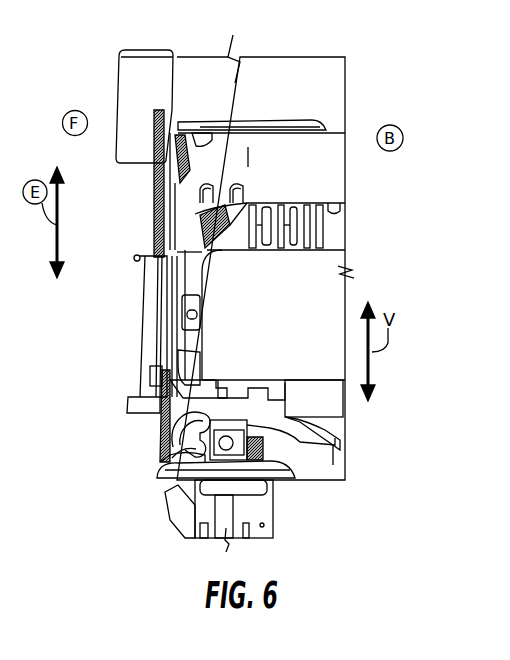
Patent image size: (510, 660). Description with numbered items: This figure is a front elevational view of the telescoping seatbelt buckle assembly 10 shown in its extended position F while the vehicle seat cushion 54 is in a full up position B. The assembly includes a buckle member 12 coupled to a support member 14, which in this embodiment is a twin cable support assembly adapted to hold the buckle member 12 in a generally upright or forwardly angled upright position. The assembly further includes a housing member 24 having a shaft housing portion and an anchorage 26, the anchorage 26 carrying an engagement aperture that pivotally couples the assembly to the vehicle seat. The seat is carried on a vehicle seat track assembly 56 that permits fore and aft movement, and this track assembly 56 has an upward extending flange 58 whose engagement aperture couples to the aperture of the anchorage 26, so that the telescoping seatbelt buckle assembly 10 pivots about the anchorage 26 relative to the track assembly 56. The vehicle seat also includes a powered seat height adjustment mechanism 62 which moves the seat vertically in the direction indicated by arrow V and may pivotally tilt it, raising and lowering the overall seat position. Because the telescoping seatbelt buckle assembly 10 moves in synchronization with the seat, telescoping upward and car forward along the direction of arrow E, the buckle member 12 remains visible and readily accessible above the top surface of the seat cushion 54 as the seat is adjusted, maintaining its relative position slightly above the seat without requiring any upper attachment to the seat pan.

The telescoping seatbelt buckle assembly 10 is at (95, 53).
The buckle member 12 is at (117, 117).
The support member 14 is at (153, 187).
The housing member 24 is at (136, 330).
The anchorage 26 is at (157, 373).
The seat cushion 54 is at (307, 150).
The vehicle seat track assembly 56 is at (158, 456).
The upward extending flange 58 is at (158, 423).
The powered seat height adjustment mechanism 62 is at (330, 233).